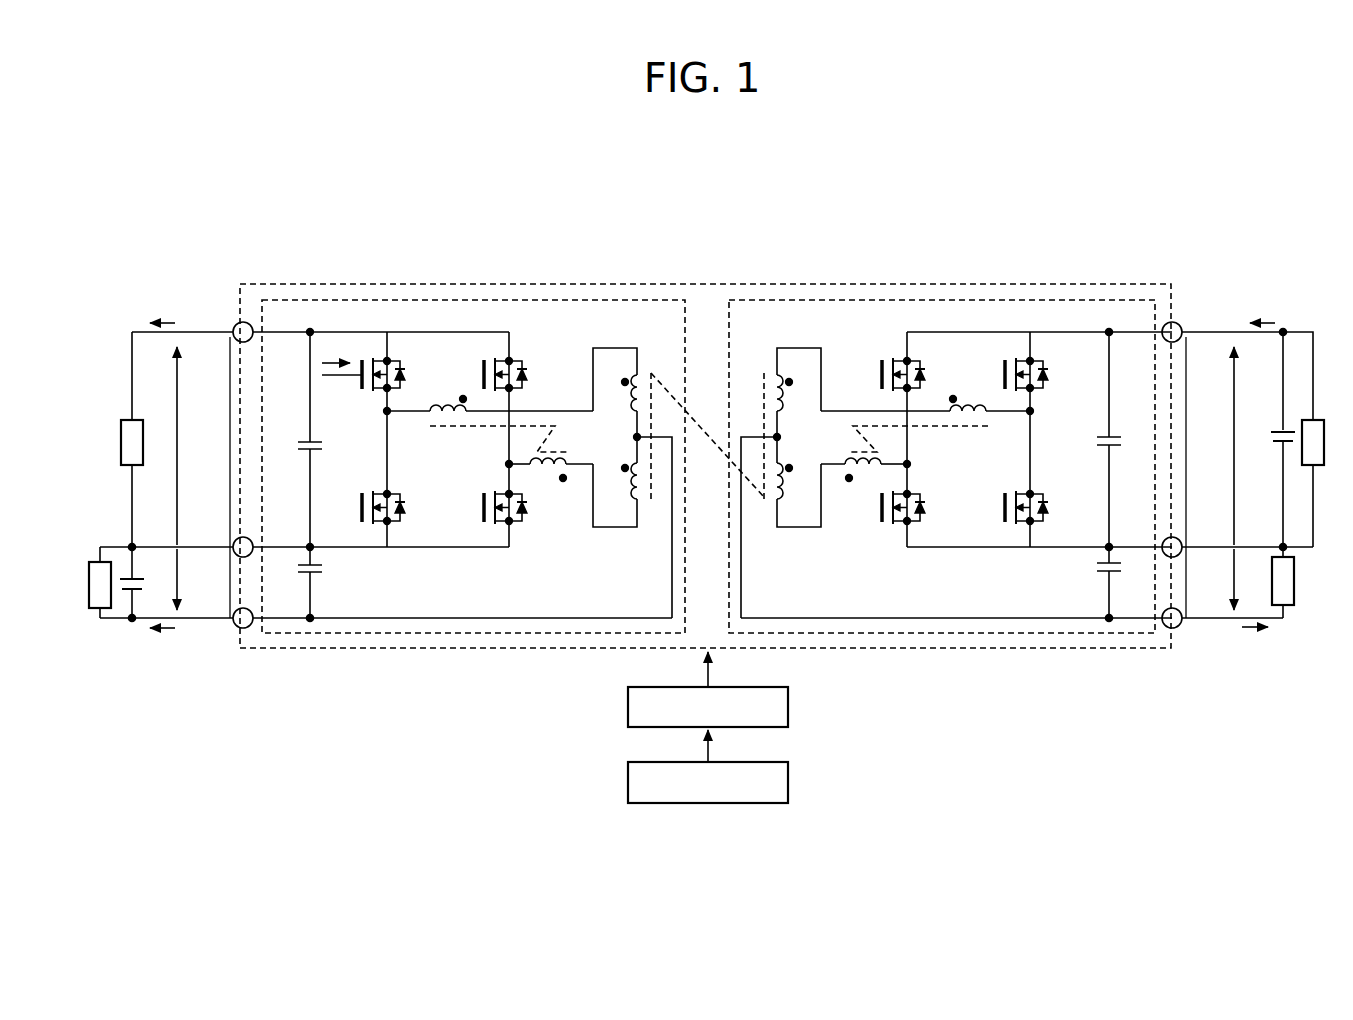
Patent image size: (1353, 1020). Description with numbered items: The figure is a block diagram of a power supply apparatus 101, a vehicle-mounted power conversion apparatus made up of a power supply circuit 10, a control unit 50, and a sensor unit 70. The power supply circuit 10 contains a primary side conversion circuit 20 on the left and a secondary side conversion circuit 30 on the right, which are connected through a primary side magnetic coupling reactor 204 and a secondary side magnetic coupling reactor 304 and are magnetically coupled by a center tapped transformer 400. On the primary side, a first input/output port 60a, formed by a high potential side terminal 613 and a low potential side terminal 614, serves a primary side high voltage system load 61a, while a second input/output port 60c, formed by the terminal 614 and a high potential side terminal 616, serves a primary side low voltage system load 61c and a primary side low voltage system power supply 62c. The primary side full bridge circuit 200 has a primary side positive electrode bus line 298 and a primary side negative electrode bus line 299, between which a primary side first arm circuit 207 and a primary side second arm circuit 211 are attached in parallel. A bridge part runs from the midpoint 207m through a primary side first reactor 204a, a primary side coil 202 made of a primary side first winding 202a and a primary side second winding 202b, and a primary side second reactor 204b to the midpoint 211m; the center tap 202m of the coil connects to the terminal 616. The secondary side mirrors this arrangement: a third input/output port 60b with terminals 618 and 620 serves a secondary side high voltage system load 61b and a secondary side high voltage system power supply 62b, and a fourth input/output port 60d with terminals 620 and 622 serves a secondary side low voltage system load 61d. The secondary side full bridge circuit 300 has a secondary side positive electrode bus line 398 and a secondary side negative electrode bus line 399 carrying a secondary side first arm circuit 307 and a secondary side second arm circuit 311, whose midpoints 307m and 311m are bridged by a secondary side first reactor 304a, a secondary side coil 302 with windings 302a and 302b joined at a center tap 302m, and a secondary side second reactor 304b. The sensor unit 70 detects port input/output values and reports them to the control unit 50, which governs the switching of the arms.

The power supply apparatus 101 is at (704, 510).
The power supply circuit 10 is at (1057, 284).
The primary side conversion circuit 20 is at (463, 294).
The primary side full bridge circuit 200 is at (548, 300).
The secondary side conversion circuit 30 is at (950, 294).
The secondary side full bridge circuit 300 is at (853, 300).
The primary side coil 202 is at (637, 348).
The primary side first winding 202a is at (630, 380).
The center tap 202m is at (635, 437).
The primary side second winding 202b is at (630, 500).
The secondary side coil 302 is at (777, 344).
The secondary side first winding 302a is at (785, 380).
The center tap 302m is at (780, 437).
The secondary side second winding 302b is at (781, 500).
The transformer 400 is at (707, 414).
The primary side magnetic coupling reactor 204 is at (488, 429).
The primary side first reactor 204a is at (445, 402).
The primary side second reactor 204b is at (547, 475).
The secondary side magnetic coupling reactor 304 is at (937, 431).
The secondary side first reactor 304a is at (962, 402).
The secondary side second reactor 304b is at (855, 475).
The primary side first arm circuit 207 is at (378, 532).
The primary side second arm circuit 211 is at (494, 532).
The secondary side second arm circuit 311 is at (882, 532).
The secondary side first arm circuit 307 is at (1000, 532).
The midpoint 207m is at (384, 412).
The midpoint 211m is at (507, 464).
The midpoint 307m is at (1033, 411).
The midpoint 311m is at (910, 464).
The primary side positive electrode bus line 298 is at (345, 332).
The primary side negative electrode bus line 299 is at (333, 548).
The secondary side positive electrode bus line 398 is at (1053, 332).
The secondary side negative electrode bus line 399 is at (1075, 548).
The high potential side terminal 613 is at (237, 326).
The low potential side terminal 614 is at (252, 540).
The high potential side terminal 616 is at (242, 630).
The high potential side terminal 618 is at (1178, 326).
The low potential side terminal 620 is at (1165, 540).
The high potential side terminal 622 is at (1178, 628).
The primary side high voltage system load 61a is at (123, 420).
The secondary side high voltage system load 61b is at (1322, 420).
The primary side low voltage system load 61c is at (92, 608).
The secondary side low voltage system load 61d is at (1295, 605).
The primary side low voltage system power supply 62c is at (122, 577).
The secondary side high voltage system power supply 62b is at (1273, 440).
The first input/output port 60a is at (222, 445).
The third input/output port 60b is at (1190, 440).
The second input/output port 60c is at (222, 585).
The fourth input/output port 60d is at (1190, 585).
The control unit 50 is at (790, 708).
The sensor unit 70 is at (790, 783).